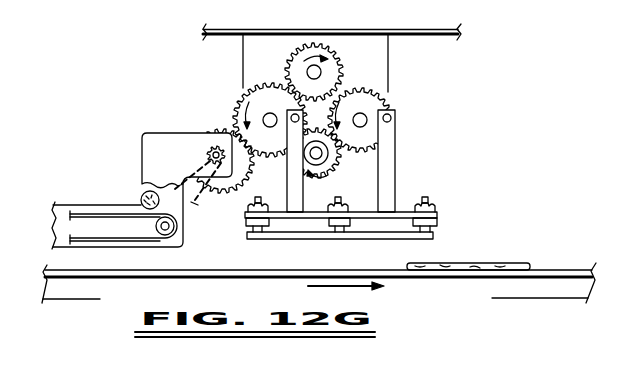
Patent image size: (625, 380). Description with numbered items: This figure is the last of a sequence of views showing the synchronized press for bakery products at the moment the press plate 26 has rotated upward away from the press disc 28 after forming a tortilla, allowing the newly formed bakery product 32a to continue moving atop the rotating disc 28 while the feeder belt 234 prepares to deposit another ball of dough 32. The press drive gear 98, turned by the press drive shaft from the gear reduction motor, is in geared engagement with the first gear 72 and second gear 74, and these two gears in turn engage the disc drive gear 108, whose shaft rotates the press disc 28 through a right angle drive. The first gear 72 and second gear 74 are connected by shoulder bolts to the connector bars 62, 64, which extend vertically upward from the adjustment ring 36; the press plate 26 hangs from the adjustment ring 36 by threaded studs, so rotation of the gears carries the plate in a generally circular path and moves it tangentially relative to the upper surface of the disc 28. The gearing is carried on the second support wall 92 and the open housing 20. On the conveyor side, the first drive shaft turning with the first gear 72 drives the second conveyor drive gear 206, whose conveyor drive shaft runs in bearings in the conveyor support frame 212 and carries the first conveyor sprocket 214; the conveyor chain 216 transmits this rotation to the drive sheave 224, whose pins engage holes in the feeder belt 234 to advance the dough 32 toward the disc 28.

The open housing 20 is at (326, 30).
The second support wall 92 is at (389, 62).
The first gear 72 is at (240, 104).
The disc drive gear 108 is at (338, 75).
The second gear 74 is at (392, 101).
The press drive gear 98 is at (322, 178).
The second conveyor drive gear 206 is at (207, 131).
The connector bar 62 is at (289, 184).
The connector bar 64 is at (393, 168).
The adjustment ring 36 is at (437, 214).
The press plate 26 is at (434, 235).
The press disc 28 is at (303, 270).
The bakery product 32a is at (502, 263).
The feeder belt 234 is at (86, 212).
The drive sheave 224 is at (163, 231).
The conveyor support frame 212 is at (142, 153).
The dough 32 is at (143, 197).
The first conveyor sprocket 214 is at (207, 154).
The conveyor chain 216 is at (196, 199).